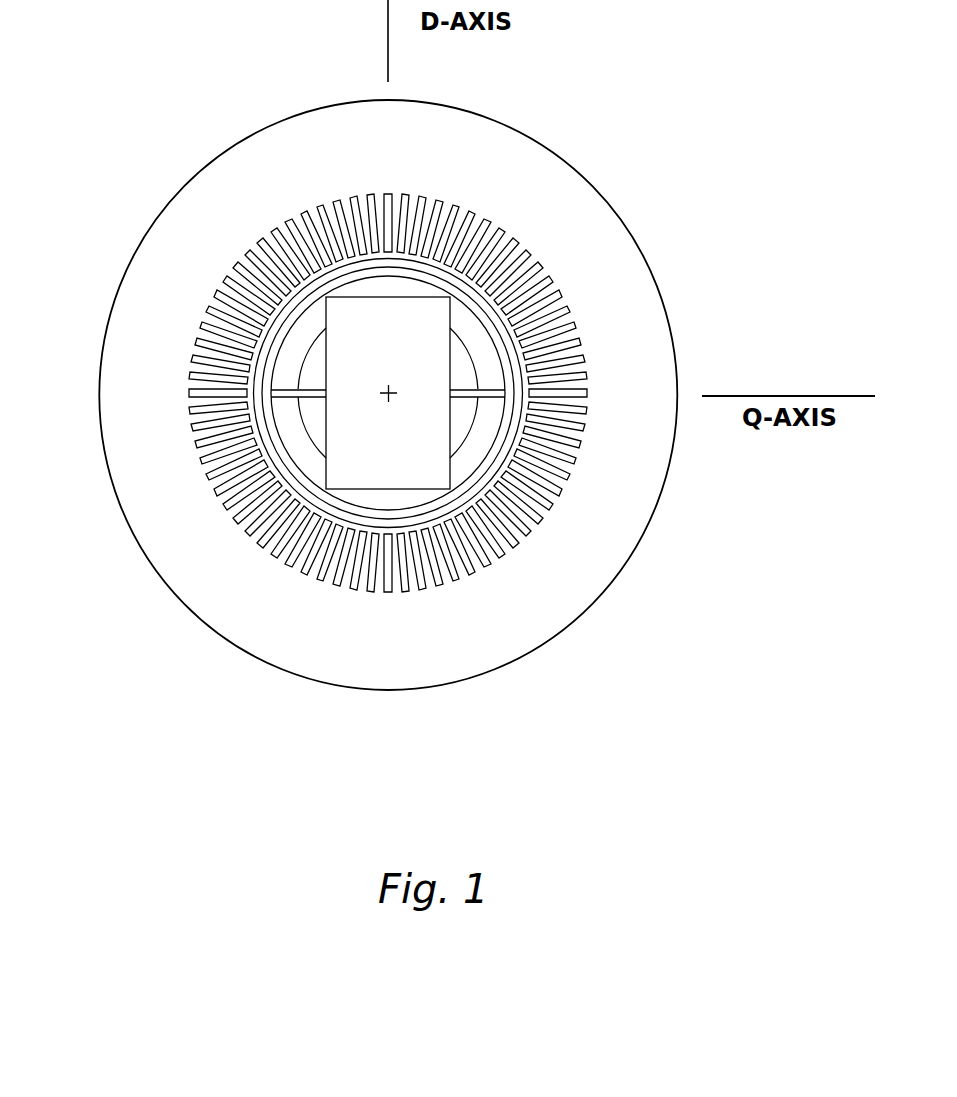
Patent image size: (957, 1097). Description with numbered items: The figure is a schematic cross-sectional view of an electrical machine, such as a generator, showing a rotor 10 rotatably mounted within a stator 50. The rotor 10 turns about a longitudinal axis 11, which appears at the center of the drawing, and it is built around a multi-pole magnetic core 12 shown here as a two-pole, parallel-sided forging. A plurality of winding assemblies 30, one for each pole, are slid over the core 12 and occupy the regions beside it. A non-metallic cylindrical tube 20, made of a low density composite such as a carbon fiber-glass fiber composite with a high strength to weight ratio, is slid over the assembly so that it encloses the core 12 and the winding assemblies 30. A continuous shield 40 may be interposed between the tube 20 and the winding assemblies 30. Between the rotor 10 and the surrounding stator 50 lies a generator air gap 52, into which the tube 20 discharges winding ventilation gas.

The rotor 10 is at (403, 460).
The longitudinal axis 11 is at (392, 392).
The multi-pole magnetic core 12 is at (412, 489).
The cylindrical tube 20 is at (288, 478).
The winding assemblies 30 is at (293, 428).
The continuous shield 40 is at (505, 427).
The stator 50 is at (515, 157).
The generator air gap 52 is at (495, 293).